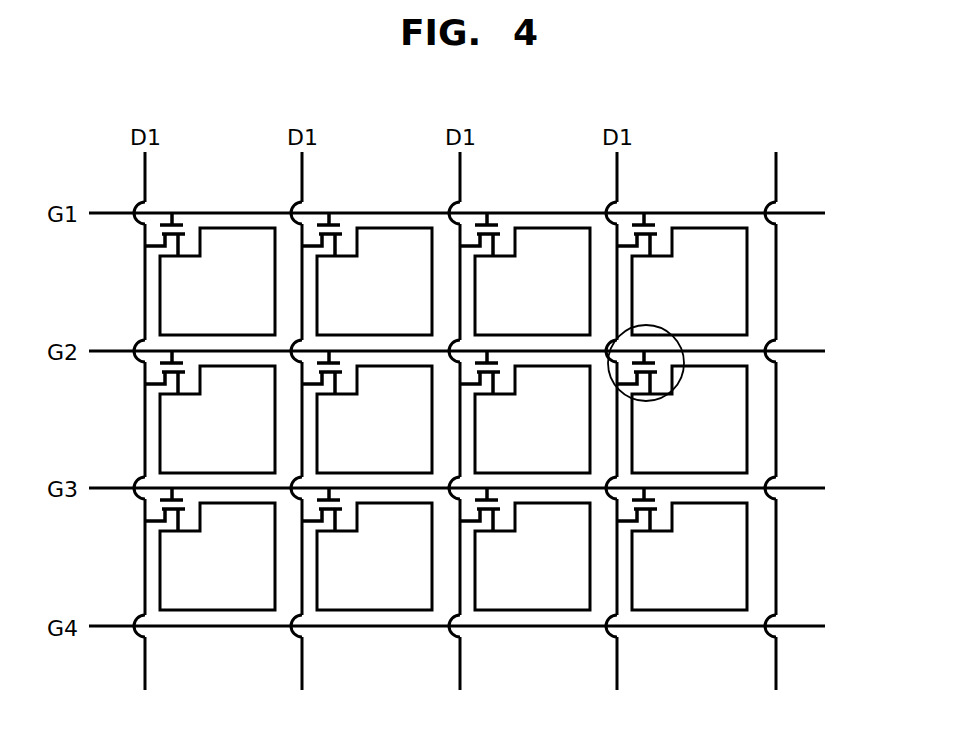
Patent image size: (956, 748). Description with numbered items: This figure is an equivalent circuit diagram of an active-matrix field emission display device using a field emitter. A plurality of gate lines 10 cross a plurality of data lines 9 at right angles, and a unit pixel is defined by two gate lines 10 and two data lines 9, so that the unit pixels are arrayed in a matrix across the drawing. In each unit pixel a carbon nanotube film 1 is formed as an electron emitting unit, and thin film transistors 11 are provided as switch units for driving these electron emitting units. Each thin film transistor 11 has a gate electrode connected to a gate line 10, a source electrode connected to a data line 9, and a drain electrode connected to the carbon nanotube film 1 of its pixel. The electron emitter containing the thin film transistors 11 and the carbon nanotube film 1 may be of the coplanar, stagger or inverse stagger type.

The carbon nanotube film 1 is at (737, 282).
The data line 9 is at (776, 162).
The gate line 10 is at (112, 213).
The thin film transistor 11 is at (683, 369).